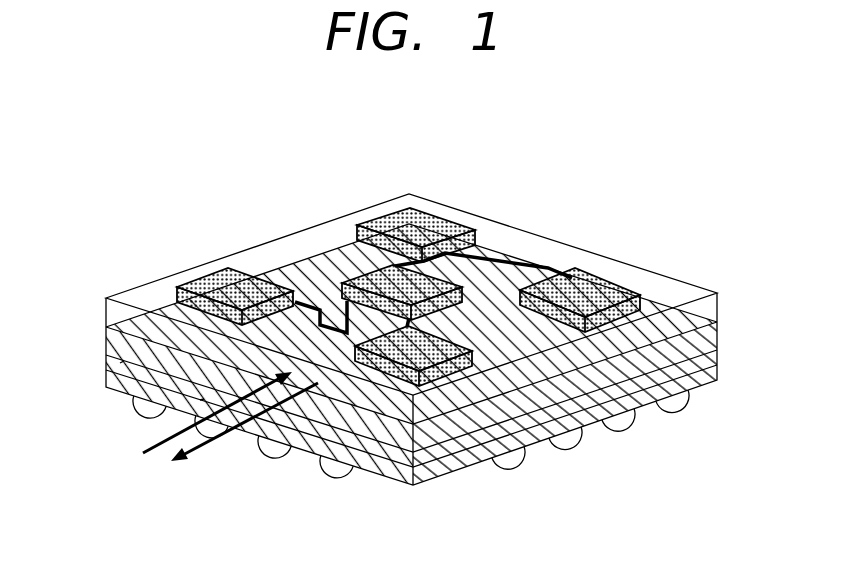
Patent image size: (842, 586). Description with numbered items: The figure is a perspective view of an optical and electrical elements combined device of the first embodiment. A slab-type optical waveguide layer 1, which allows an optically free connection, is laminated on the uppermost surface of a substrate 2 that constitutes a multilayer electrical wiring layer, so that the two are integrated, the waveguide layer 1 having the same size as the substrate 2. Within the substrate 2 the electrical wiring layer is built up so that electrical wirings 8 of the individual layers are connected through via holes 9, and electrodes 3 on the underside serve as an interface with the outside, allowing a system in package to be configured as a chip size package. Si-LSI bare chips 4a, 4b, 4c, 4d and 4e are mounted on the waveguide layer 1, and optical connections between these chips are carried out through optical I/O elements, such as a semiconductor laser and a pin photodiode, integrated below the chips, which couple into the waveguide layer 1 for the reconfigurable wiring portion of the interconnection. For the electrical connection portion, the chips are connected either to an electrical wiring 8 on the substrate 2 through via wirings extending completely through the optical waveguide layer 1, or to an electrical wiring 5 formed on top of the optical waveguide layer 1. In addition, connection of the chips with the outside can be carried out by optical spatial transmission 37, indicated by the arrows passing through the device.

The optical waveguide layer 1 is at (708, 306).
The substrate 2 is at (708, 347).
The electrodes 3 is at (672, 404).
The Si-LSI 4a is at (405, 278).
The Si-LSI 4b is at (215, 271).
The Si-LSI 4c is at (466, 368).
The Si-LSI 4d is at (400, 213).
The Si-LSI 4e is at (606, 286).
The electrical wiring 5 is at (508, 262).
The electrical wirings 8 is at (120, 363).
The via holes 9 is at (200, 400).
The optical spatial transmission 37 is at (208, 445).